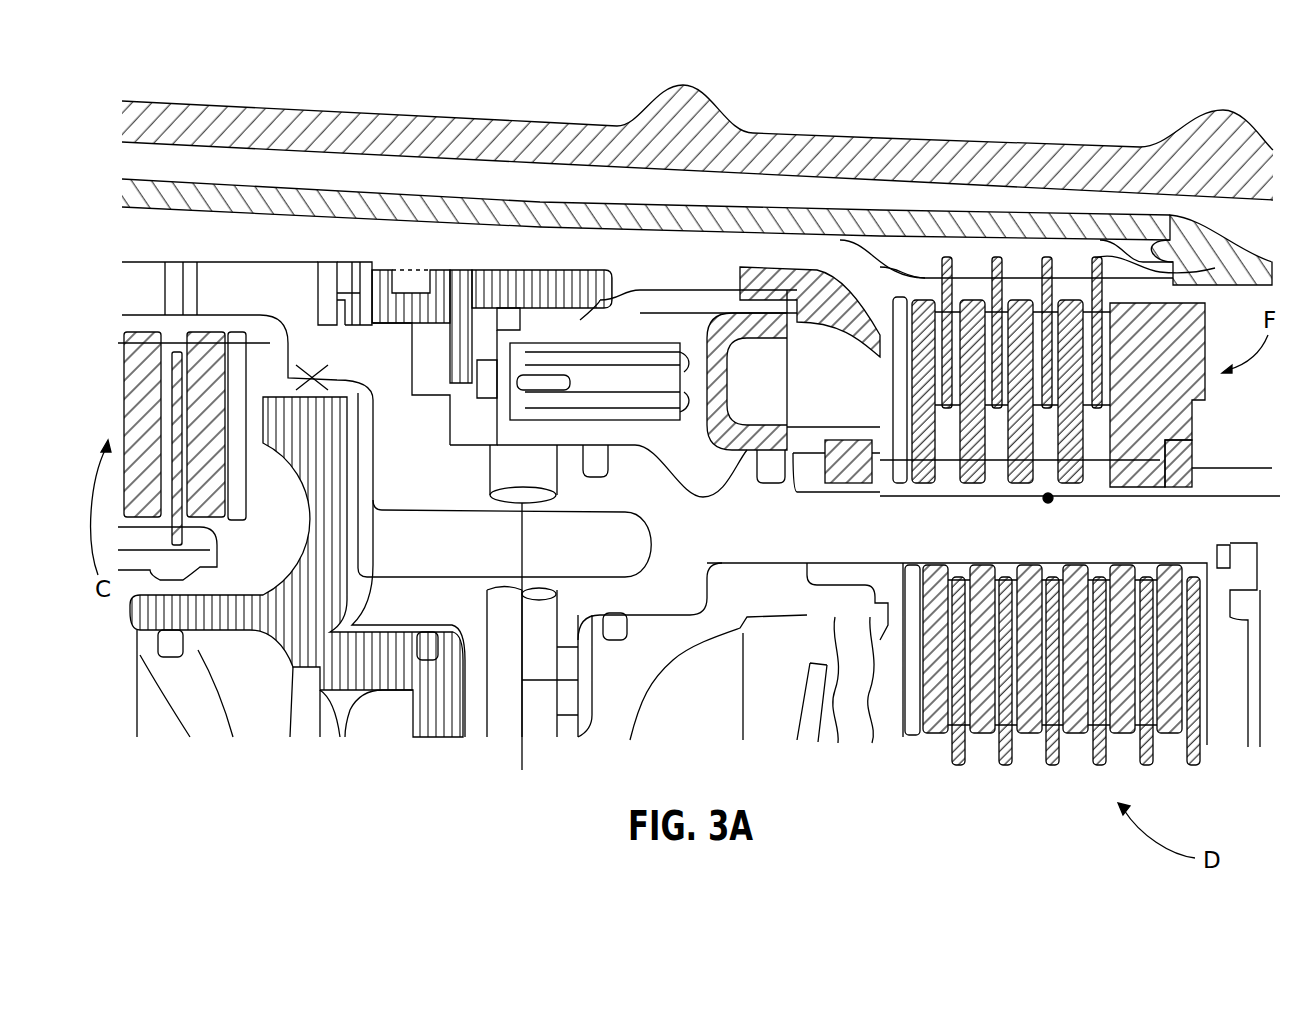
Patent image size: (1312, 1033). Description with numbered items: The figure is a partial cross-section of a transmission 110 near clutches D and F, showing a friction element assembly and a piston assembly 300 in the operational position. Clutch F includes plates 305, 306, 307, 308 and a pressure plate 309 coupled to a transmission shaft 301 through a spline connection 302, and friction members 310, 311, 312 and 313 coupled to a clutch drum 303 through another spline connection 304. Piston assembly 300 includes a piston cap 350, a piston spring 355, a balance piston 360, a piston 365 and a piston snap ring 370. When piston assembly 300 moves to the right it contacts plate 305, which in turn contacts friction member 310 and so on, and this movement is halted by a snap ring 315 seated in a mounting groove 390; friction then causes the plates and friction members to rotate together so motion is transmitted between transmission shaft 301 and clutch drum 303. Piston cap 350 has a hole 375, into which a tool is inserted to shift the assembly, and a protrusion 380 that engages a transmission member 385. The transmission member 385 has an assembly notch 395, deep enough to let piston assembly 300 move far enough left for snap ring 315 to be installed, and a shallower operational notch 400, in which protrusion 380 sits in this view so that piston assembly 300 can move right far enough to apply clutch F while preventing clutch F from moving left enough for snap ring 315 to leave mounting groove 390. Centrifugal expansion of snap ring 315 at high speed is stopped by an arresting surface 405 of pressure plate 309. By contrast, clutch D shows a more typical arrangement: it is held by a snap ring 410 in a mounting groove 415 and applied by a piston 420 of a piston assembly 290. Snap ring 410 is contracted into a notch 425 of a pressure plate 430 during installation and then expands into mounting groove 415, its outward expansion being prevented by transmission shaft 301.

The transmission 110 is at (1137, 102).
The piston assembly 290 is at (707, 700).
The piston assembly 300 is at (672, 275).
The transmission shaft 301 is at (1170, 543).
The spline connection 302 is at (1052, 633).
The clutch drum 303 is at (1215, 268).
The spline connection 304 is at (1143, 258).
The plate 305 is at (920, 458).
The plate 306 is at (970, 460).
The plate 307 is at (1022, 460).
The plate 308 is at (1072, 460).
The pressure plate 309 is at (1190, 322).
The friction member 310 is at (947, 255).
The friction member 311 is at (997, 255).
The friction member 312 is at (1047, 255).
The friction member 313 is at (1097, 258).
The snap ring 315 is at (1180, 455).
The piston cap 350 is at (447, 297).
The piston spring 355 is at (585, 380).
The balance piston 360 is at (762, 300).
The piston 365 is at (805, 280).
The piston snap ring 370 is at (845, 460).
The hole 375 is at (413, 282).
The protrusion 380 is at (358, 288).
The transmission member 385 is at (237, 291).
The mounting groove 390 is at (1194, 495).
The assembly notch 395 is at (318, 288).
The operational notch 400 is at (333, 300).
The arresting surface 405 is at (1178, 437).
The snap ring 410 is at (1240, 578).
The mounting groove 415 is at (1232, 556).
The piston 420 is at (883, 653).
The notch 425 is at (1262, 608).
The pressure plate 430 is at (1240, 725).